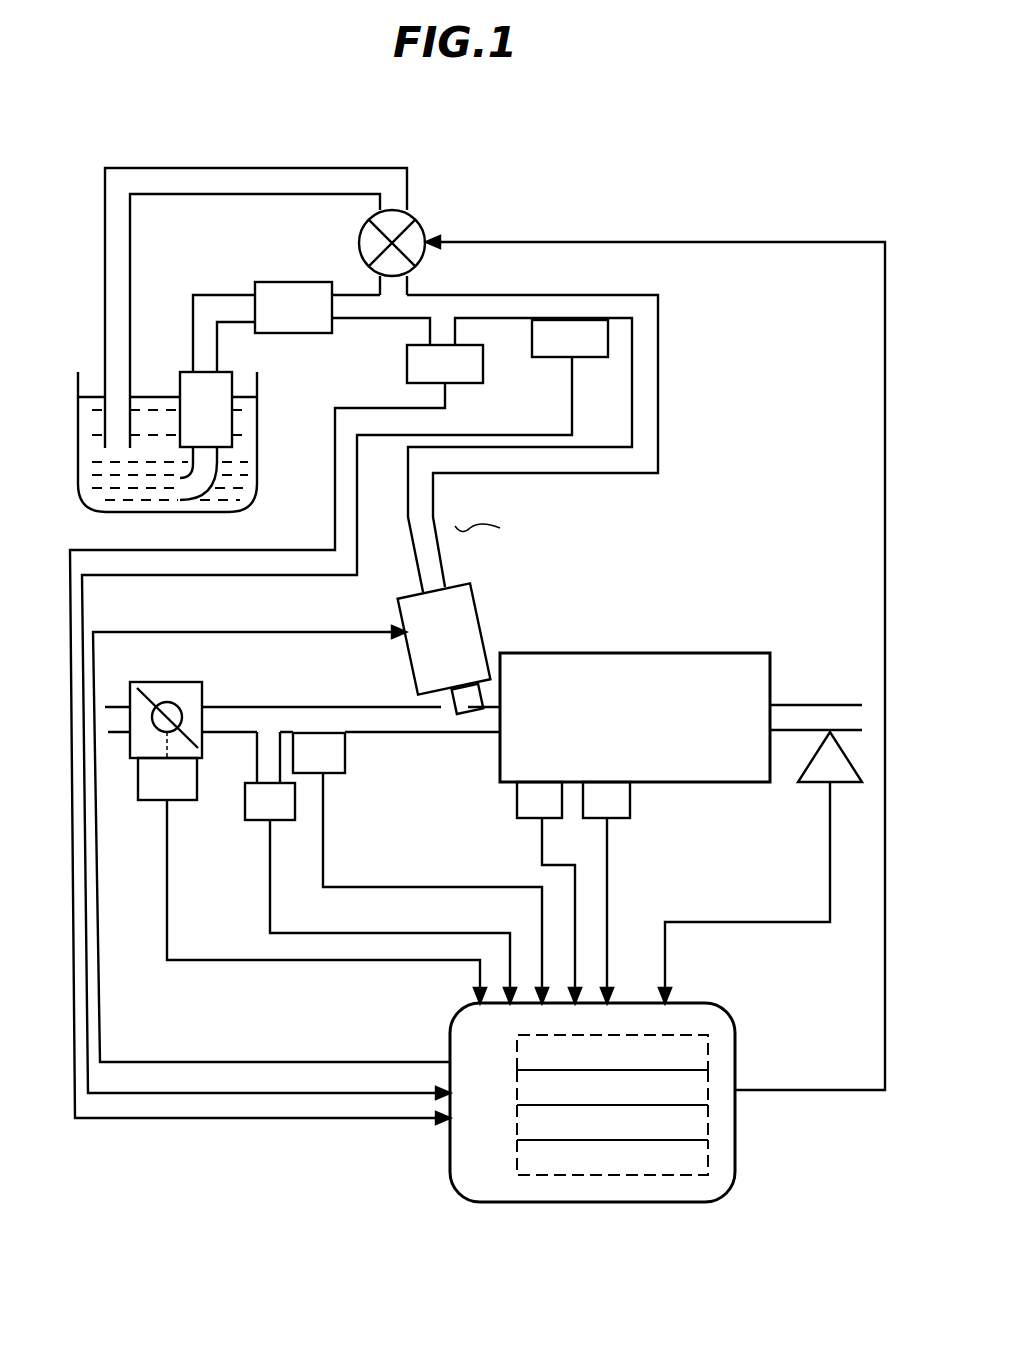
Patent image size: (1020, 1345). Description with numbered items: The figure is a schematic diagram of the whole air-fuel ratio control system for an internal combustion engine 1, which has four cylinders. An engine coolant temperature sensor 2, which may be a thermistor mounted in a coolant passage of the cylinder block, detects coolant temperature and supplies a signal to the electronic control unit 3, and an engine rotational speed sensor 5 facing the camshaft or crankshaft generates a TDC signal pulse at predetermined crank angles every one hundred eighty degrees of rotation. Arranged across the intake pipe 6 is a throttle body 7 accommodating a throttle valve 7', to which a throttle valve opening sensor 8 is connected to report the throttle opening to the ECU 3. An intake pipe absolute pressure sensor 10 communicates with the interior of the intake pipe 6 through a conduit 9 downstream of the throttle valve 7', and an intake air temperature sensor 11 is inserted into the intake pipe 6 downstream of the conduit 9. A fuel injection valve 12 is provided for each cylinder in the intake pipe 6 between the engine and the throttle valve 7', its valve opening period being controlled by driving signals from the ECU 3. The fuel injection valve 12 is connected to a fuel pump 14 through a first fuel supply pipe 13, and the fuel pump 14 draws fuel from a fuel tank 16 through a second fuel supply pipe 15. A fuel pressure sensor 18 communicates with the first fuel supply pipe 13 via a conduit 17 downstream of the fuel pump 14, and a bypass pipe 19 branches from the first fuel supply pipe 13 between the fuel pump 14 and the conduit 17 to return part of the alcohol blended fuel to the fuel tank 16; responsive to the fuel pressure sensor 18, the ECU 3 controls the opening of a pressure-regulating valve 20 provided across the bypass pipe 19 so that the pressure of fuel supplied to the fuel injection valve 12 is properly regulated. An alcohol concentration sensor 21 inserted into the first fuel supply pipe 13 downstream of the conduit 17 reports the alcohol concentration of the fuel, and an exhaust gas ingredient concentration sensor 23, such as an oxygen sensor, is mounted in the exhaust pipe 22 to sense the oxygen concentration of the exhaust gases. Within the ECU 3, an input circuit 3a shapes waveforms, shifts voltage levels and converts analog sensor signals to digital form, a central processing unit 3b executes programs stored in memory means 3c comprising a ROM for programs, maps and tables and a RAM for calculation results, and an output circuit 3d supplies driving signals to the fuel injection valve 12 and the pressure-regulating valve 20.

The internal combustion engine 1 is at (695, 653).
The engine coolant temperature (TW) sensor 2 is at (544, 818).
The electronic control unit (ECU) 3 is at (633, 719).
The input circuit 3a is at (708, 1038).
The central processing unit (CPU) 3b is at (708, 1080).
The memory means 3c is at (708, 1135).
The output circuit 3d is at (708, 1165).
The engine rotational speed (NE) sensor 5 is at (608, 818).
The intake pipe 6 is at (278, 707).
The throttle body 7 is at (187, 699).
The throttle valve 7' is at (167, 699).
The throttle valve opening (θTH) sensor 8 is at (197, 798).
The conduit 9 is at (257, 777).
The intake pipe absolute pressure (PBA) sensor 10 is at (283, 820).
The intake air temperature (TA) sensor 11 is at (325, 775).
The fuel injection valve 12 is at (478, 622).
The first fuel supply pipe 13 is at (660, 436).
The fuel pump 14 is at (290, 282).
The second fuel supply pipe 15 is at (193, 320).
The fuel tank 16 is at (257, 432).
The conduit 17 is at (430, 331).
The fuel pressure (PAL) sensor 18 is at (447, 392).
The bypass pipe 19 is at (252, 195).
The pressure-regulating valve 20 is at (423, 224).
The alcohol concentration (ALC) sensor 21 is at (534, 350).
The exhaust pipe 22 is at (782, 732).
The exhaust gas ingredient concentration sensor 23 is at (855, 782).